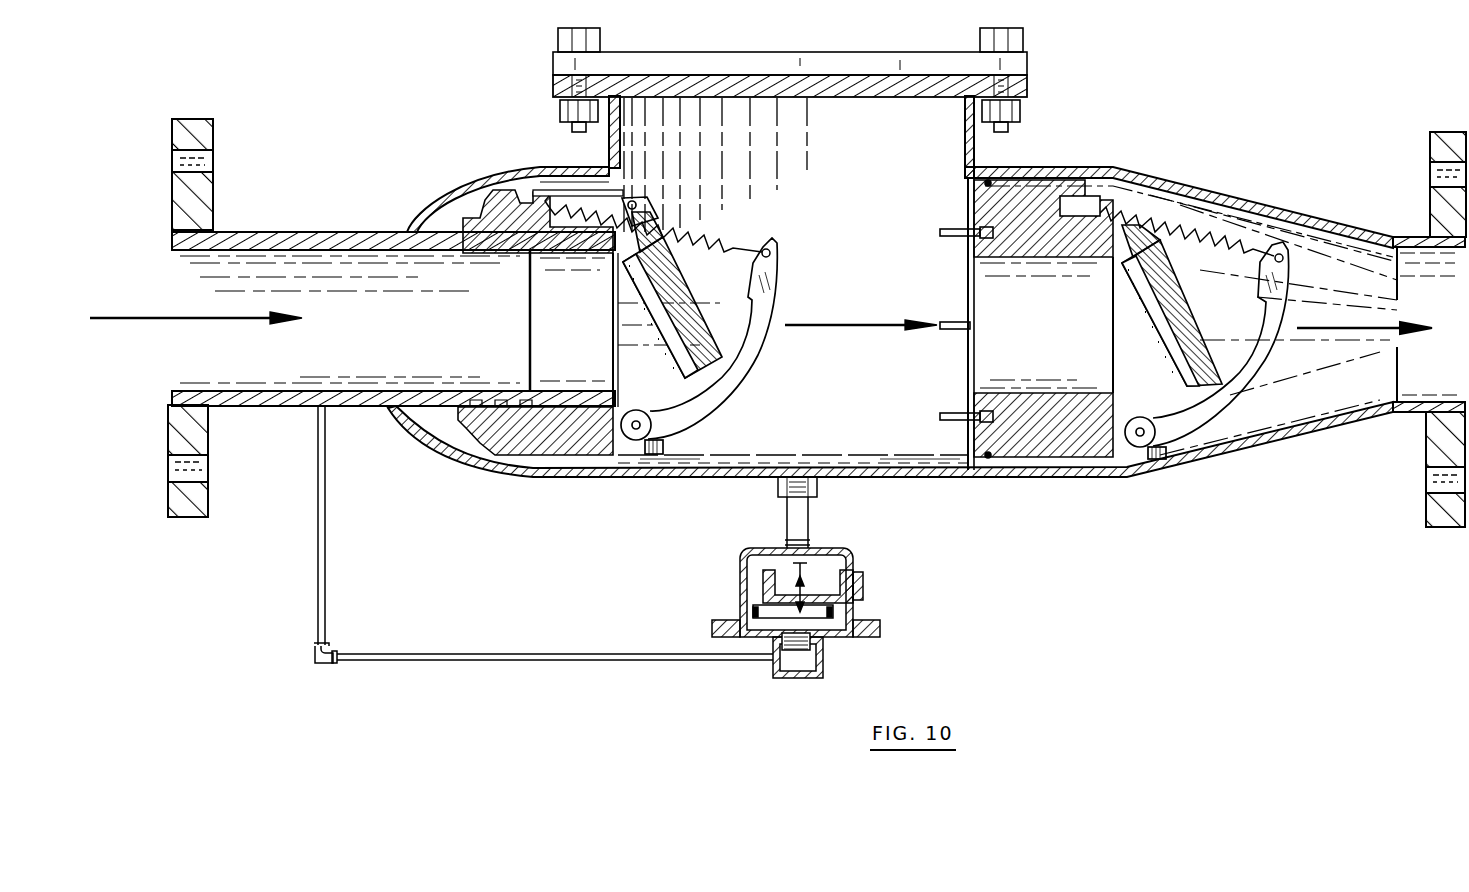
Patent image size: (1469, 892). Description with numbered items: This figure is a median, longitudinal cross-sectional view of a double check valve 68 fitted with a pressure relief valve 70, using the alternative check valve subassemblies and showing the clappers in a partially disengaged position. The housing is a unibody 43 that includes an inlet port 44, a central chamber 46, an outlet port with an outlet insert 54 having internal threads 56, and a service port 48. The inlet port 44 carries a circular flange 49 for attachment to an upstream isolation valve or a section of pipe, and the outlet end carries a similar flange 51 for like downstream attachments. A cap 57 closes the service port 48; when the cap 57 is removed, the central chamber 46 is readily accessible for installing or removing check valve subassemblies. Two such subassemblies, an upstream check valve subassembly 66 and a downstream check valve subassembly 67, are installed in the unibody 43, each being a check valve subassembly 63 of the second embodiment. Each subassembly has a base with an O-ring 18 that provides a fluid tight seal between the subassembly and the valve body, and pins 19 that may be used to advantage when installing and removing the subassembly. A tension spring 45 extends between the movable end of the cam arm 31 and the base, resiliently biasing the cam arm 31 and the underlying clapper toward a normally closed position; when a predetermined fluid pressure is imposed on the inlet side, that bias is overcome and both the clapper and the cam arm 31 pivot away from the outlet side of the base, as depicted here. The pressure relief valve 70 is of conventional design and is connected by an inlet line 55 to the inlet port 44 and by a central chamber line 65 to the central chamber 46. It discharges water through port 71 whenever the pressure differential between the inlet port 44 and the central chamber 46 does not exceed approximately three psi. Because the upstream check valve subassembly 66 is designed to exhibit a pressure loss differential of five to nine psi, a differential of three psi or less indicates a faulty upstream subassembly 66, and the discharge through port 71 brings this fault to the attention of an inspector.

The O-ring 18 is at (985, 458).
The pins 19 is at (950, 228).
The clapper arm 31 is at (742, 398).
The unibody 43 is at (398, 440).
The inlet port 44 is at (130, 290).
The tension spring 45 is at (728, 238).
The central chamber 46 is at (838, 193).
The service port 48 is at (756, 42).
The circular flange 49 is at (170, 130).
The flange 51 is at (1440, 528).
The outlet insert 54 is at (1046, 180).
The inlet line 55 is at (574, 668).
The internal threads 56 is at (1062, 463).
The cap 57 is at (848, 75).
The check valve subassembly 63 is at (686, 184).
The central chamber line 65 is at (800, 526).
The upstream check valve subassembly 66 is at (684, 450).
The downstream check valve subassembly 67 is at (928, 405).
The double check valve 68 is at (582, 490).
The pressure relief valve 70 is at (890, 628).
The port 71 is at (864, 590).